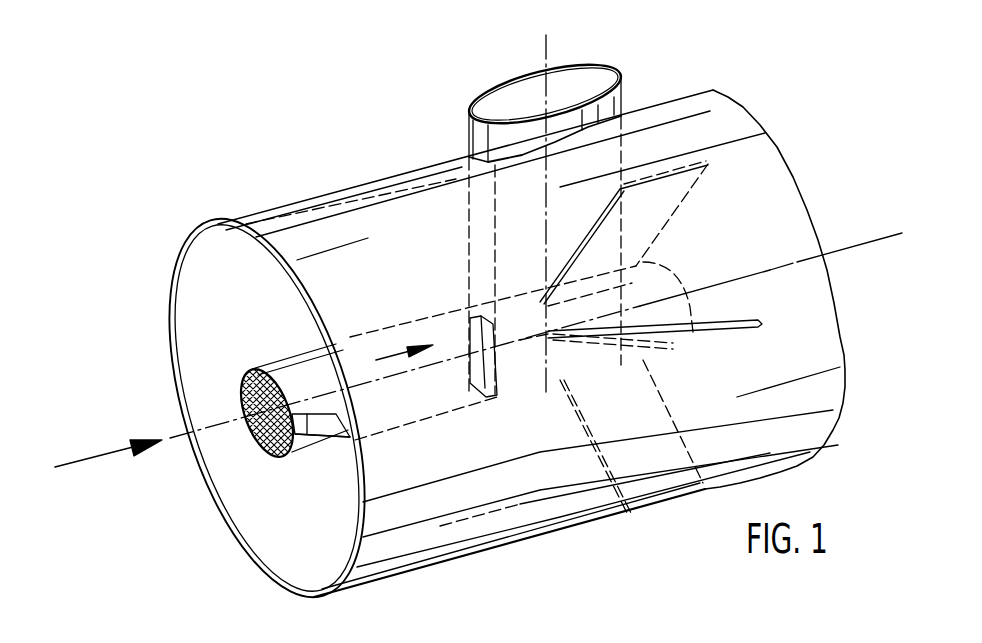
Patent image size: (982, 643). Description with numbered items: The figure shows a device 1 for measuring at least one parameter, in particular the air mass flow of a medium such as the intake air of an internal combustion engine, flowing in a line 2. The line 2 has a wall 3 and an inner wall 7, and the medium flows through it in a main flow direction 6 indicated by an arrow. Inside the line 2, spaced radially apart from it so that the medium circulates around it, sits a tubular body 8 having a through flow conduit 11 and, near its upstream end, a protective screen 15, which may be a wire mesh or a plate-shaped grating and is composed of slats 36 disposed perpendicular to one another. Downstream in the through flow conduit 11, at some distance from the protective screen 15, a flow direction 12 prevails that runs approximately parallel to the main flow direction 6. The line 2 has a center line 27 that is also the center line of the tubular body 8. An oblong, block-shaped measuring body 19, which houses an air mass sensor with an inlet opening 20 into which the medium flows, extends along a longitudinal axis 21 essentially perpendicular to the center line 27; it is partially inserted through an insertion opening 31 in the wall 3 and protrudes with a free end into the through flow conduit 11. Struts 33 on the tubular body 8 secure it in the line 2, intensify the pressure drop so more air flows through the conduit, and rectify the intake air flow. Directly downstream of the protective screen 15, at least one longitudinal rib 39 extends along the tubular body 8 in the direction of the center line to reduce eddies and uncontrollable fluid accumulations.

The device 1 is at (780, 84).
The line 2 is at (210, 278).
The wall 3 is at (282, 586).
The main flow direction 6 is at (92, 463).
The inner wall 7 is at (382, 193).
The tubular body 8 is at (318, 437).
The through flow conduit 11 is at (307, 418).
The flow direction 12 is at (390, 348).
The protective screen 15 is at (245, 378).
The measuring body 19 is at (625, 140).
The inlet opening 20 is at (480, 340).
The longitudinal axis 21 is at (542, 62).
The center line 27 is at (866, 243).
The insertion opening 31 is at (488, 160).
The struts 33 is at (733, 328).
The slats 36 is at (270, 452).
The longitudinal rib 39 is at (345, 440).